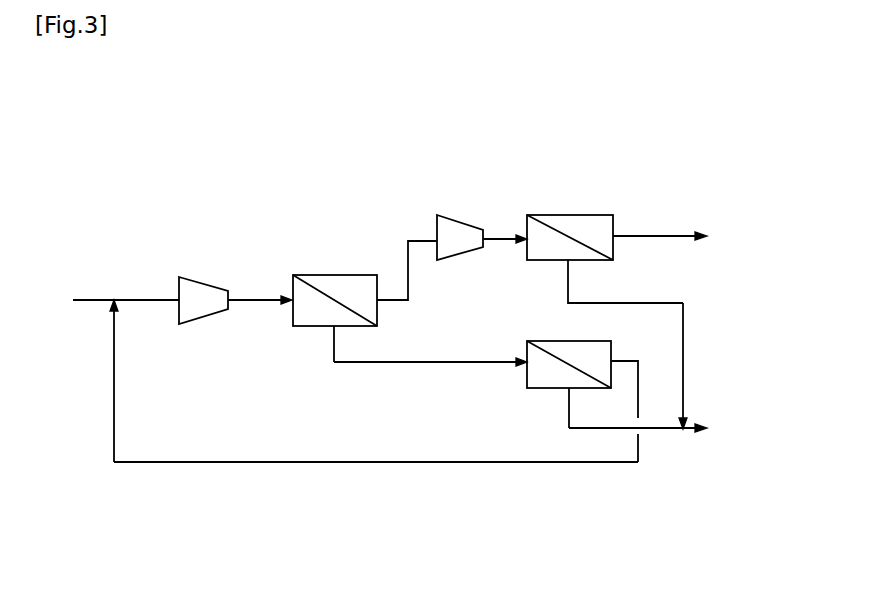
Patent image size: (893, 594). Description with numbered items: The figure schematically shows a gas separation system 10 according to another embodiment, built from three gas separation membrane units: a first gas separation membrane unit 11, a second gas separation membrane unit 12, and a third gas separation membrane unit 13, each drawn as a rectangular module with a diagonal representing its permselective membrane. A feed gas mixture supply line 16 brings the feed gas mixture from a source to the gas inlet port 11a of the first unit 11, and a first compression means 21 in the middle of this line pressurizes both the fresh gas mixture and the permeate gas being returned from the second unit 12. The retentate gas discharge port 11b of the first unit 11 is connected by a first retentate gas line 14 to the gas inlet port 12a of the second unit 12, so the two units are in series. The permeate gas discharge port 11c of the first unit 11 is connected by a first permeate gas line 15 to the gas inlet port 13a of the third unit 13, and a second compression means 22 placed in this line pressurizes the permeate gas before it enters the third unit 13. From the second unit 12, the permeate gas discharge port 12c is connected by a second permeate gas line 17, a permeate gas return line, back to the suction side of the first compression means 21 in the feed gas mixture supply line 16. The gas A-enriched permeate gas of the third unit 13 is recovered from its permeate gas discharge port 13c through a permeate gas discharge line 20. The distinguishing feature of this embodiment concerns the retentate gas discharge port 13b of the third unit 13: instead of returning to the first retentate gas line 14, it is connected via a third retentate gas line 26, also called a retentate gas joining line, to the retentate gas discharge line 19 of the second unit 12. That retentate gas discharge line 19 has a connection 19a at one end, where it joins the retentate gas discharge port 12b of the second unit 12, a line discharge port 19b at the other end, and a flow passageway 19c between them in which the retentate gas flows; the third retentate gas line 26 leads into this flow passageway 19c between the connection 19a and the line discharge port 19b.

The gas separation system 10 is at (543, 134).
The first gas separation membrane unit 11 is at (336, 275).
The gas inlet port 11a is at (290, 299).
The retentate gas discharge port 11b is at (330, 327).
The permeate gas discharge port 11c is at (381, 303).
The second gas separation membrane unit 12 is at (563, 341).
The gas inlet port 12a is at (526, 369).
The retentate gas discharge port 12b is at (562, 389).
The permeate gas discharge port 12c is at (618, 358).
The third gas separation membrane unit 13 is at (565, 215).
The gas inlet port 13a is at (526, 243).
The retentate gas discharge port 13b is at (572, 264).
The permeate gas discharge port 13c is at (615, 233).
The first retentate gas line 14 is at (425, 364).
The first permeate gas line 15 is at (407, 251).
The feed gas mixture supply line 16 is at (88, 298).
The second permeate gas line 17 is at (330, 463).
The retentate gas discharge line 19 is at (657, 431).
The connection 19a is at (575, 390).
The line discharge port 19b is at (700, 430).
The flow passageway 19c is at (665, 430).
The permeate gas discharge line 20 is at (668, 236).
The first compression means 21 is at (193, 277).
The second compression means 22 is at (450, 215).
The third retentate gas line 26 is at (655, 300).